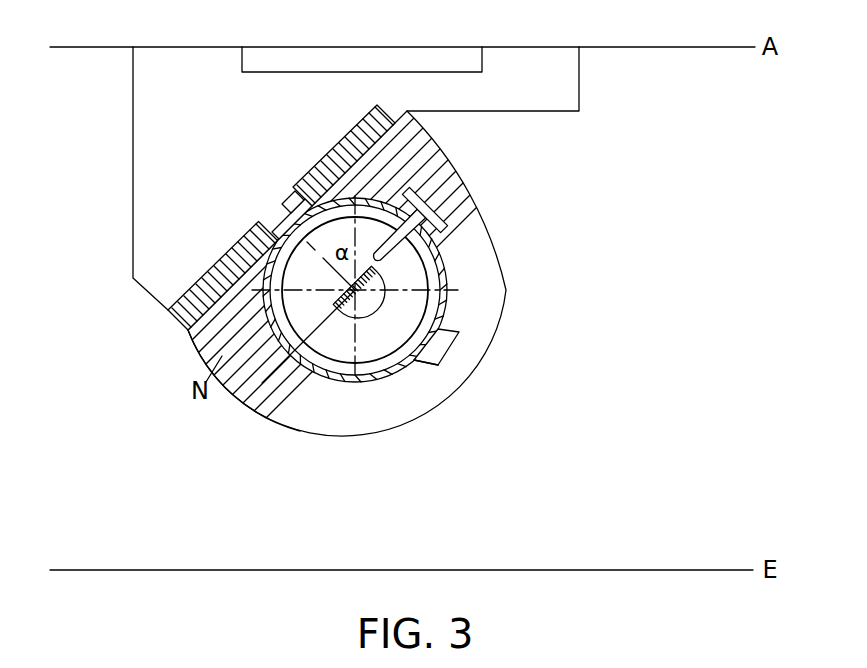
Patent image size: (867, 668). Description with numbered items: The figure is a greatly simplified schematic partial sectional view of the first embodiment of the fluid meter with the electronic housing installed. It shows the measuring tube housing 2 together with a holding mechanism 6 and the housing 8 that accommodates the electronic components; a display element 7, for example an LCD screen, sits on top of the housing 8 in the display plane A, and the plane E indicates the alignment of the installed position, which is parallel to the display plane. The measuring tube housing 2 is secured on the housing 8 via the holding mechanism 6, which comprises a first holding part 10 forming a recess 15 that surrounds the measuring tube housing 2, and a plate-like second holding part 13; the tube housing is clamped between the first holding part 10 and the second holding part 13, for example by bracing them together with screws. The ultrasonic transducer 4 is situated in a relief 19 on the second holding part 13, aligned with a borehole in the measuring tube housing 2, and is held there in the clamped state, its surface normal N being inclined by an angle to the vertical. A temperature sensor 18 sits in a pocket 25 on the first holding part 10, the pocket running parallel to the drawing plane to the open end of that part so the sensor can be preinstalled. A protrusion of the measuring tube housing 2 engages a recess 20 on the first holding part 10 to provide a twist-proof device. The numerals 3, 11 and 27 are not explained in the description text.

The measuring tube housing 2 is at (445, 277).
The bore 3 is at (368, 367).
The ultrasonic transducer 4 is at (276, 226).
The holding mechanism 6 is at (539, 365).
The display element 7 is at (325, 47).
The housing 8 is at (133, 92).
The first holding part 10 is at (481, 331).
The housing outer wall 11 is at (268, 378).
The second holding part 13 is at (229, 263).
The recess 15 is at (368, 172).
The temperature sensor 18 is at (432, 216).
The relief 19 is at (289, 193).
The recess 20 is at (452, 352).
The pocket 25 is at (398, 185).
The stop edge 27 is at (427, 360).